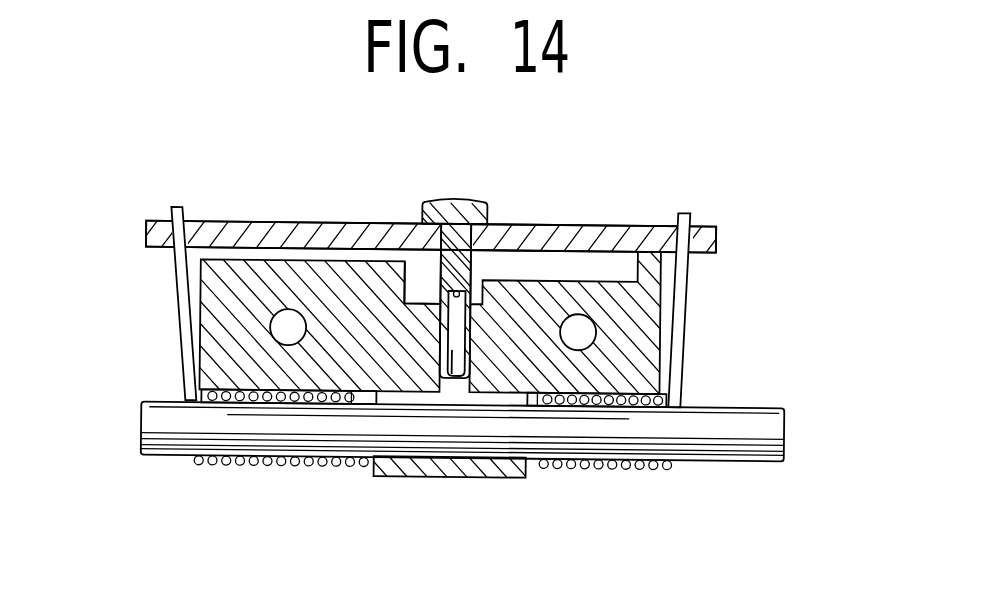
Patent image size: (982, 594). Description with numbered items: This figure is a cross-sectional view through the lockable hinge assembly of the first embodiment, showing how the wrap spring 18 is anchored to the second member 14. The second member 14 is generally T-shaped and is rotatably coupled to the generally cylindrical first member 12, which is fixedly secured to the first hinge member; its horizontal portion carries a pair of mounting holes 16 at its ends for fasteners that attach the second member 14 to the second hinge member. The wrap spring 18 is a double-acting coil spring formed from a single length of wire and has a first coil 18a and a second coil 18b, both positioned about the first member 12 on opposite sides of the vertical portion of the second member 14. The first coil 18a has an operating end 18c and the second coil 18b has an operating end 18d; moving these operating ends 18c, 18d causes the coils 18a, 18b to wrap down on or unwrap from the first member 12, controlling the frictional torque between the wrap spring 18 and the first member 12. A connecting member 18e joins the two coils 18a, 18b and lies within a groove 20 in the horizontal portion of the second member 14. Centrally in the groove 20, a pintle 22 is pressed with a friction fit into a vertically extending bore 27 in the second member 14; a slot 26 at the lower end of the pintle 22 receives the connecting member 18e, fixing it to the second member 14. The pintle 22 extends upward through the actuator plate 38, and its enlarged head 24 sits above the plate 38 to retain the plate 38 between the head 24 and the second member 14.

The first member 12 is at (787, 441).
The second member 14 is at (220, 340).
The mounting holes 16 is at (278, 320).
The wrap spring 18 is at (347, 478).
The first coil 18a is at (267, 467).
The second coil 18b is at (601, 468).
The operating end 18c is at (177, 283).
The operating end 18d is at (687, 298).
The connecting member 18e is at (414, 283).
The groove 20 is at (350, 223).
The pintle 22 is at (477, 285).
The enlarged head 24 is at (466, 200).
The slot 26 is at (458, 378).
The bore 27 is at (467, 392).
The plate 38 is at (622, 225).